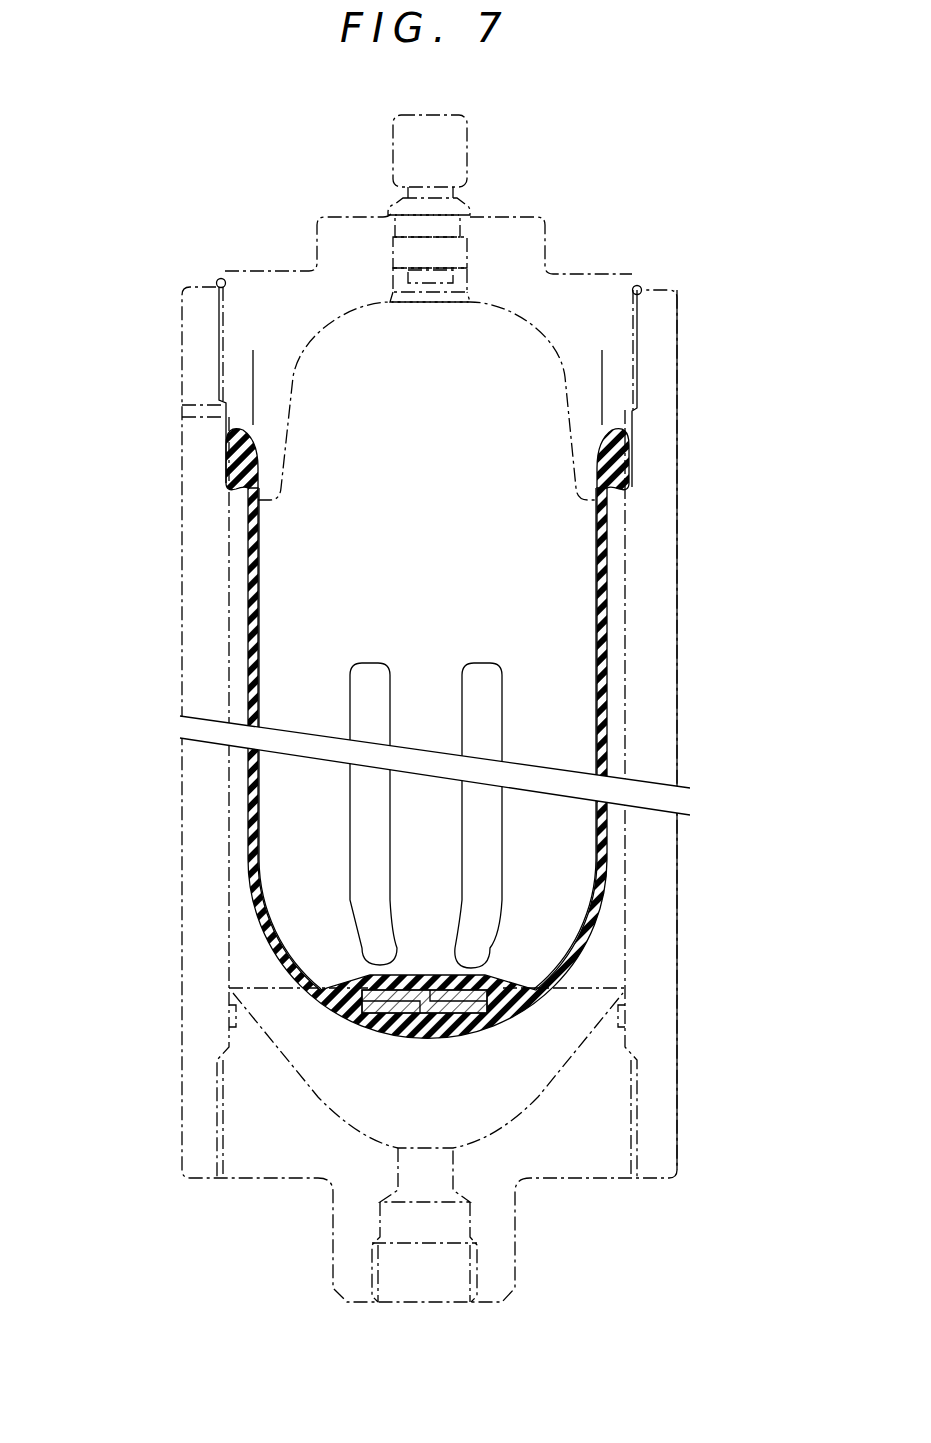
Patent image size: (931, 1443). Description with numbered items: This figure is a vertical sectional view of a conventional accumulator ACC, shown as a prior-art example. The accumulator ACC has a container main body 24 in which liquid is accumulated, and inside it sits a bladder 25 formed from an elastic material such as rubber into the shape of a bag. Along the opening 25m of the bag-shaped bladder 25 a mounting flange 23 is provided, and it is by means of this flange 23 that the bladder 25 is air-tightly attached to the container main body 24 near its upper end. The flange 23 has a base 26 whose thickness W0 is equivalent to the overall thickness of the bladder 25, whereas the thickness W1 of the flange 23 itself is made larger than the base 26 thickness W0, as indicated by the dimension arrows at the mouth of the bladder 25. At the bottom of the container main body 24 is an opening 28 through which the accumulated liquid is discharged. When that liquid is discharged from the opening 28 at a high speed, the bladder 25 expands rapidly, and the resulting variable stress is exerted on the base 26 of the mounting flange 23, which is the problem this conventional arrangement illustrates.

The accumulator ACC is at (657, 263).
The mounting flange 23 is at (632, 455).
The container main body 24 is at (657, 876).
The bladder 25 is at (604, 657).
The opening 25m is at (628, 462).
The base 26 is at (613, 478).
The opening 28 is at (445, 1284).
The thickness of the flange W1 is at (252, 355).
The base thickness W0 is at (270, 418).